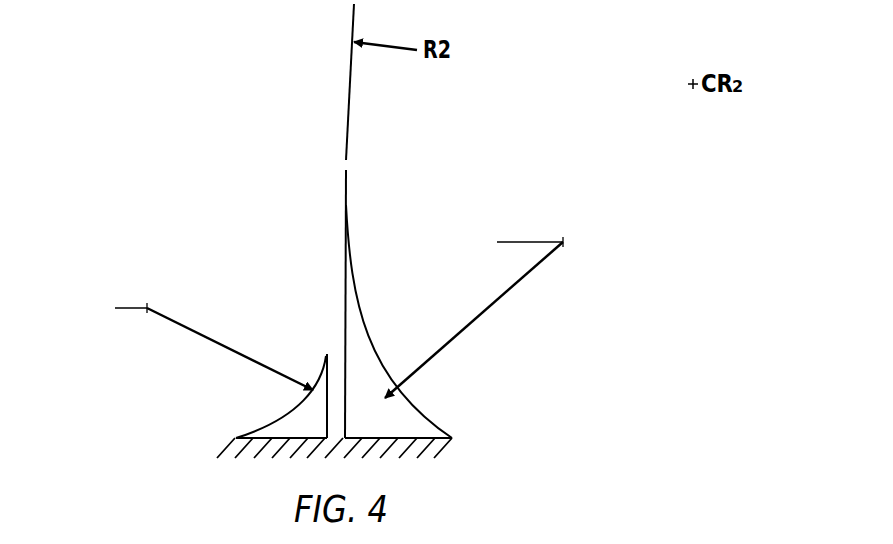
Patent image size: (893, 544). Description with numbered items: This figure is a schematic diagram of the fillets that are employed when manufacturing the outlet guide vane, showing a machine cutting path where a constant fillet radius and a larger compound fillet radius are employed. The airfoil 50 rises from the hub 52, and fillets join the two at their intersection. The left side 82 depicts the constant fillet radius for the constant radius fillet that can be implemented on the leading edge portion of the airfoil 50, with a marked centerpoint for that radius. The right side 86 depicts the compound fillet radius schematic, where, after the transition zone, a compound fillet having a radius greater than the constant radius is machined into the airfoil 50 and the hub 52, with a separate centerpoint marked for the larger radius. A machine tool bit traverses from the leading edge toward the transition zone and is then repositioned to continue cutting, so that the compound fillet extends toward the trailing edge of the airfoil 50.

The airfoil 50 is at (346, 208).
The hub 52 is at (430, 449).
The left side 82 is at (88, 270).
The right side 86 is at (535, 190).